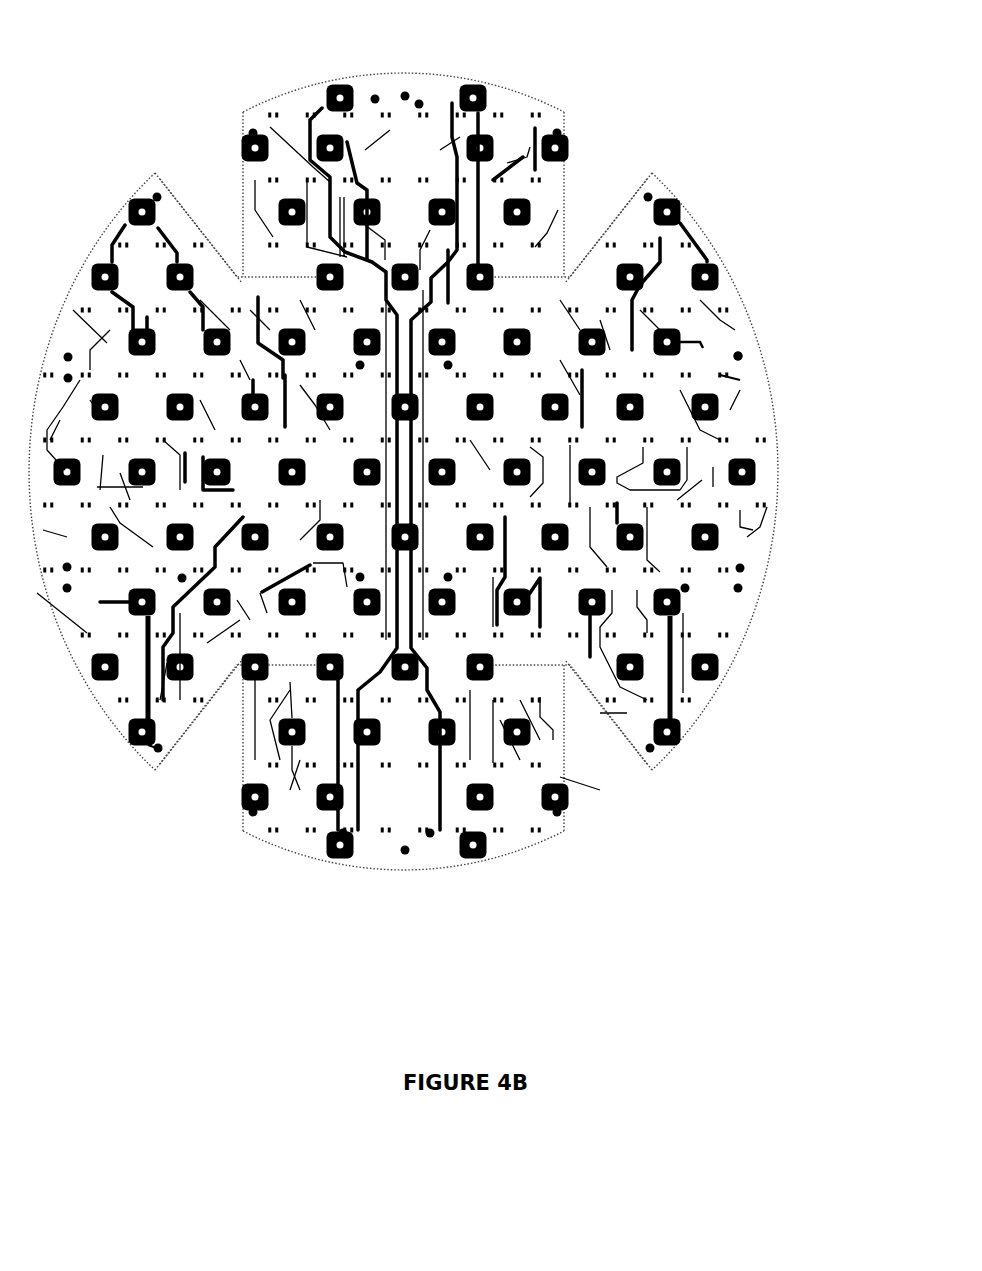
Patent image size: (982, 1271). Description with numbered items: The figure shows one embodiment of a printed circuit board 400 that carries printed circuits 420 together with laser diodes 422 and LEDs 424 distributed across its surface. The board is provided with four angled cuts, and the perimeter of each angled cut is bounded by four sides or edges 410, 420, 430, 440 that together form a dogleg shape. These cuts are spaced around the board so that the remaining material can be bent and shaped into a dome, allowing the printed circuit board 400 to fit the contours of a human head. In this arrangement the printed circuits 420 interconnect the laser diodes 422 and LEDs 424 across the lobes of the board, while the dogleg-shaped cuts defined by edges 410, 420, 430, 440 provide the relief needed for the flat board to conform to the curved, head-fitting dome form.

The printed circuit board 400 is at (403, 471).
The side/edge of angled cut 410 is at (180, 748).
The printed circuit 420 is at (695, 233).
The laser diode 422 is at (682, 327).
The LED 424 is at (737, 335).
The side/edge of angled cut 430 is at (253, 815).
The side/edge of angled cut 440 is at (290, 682).